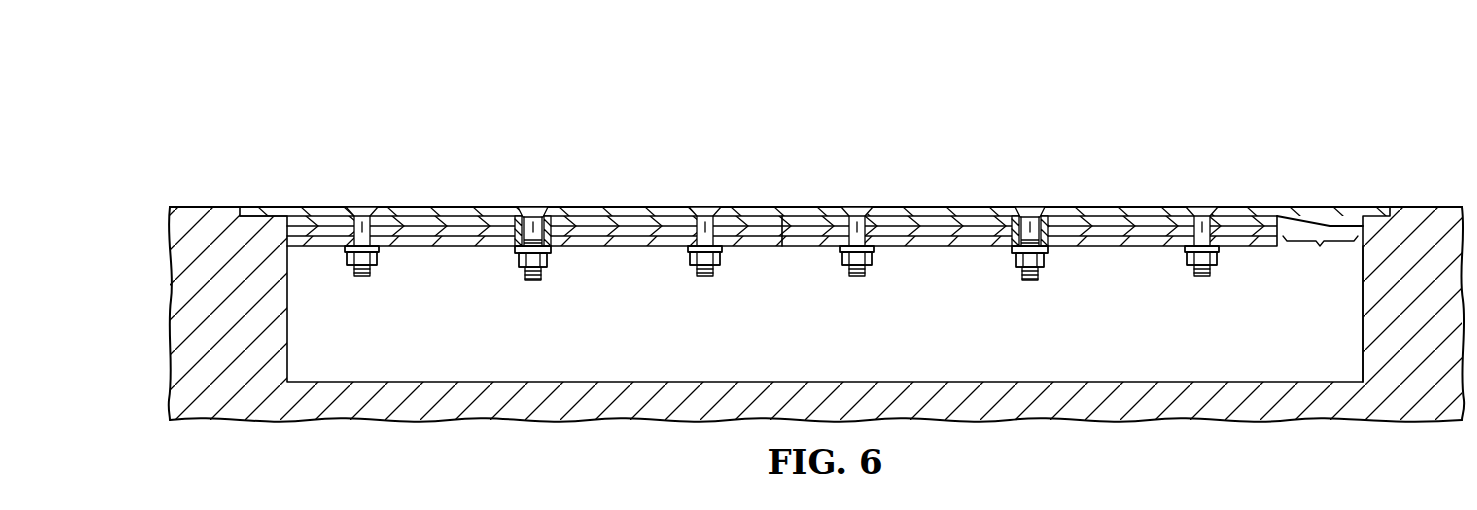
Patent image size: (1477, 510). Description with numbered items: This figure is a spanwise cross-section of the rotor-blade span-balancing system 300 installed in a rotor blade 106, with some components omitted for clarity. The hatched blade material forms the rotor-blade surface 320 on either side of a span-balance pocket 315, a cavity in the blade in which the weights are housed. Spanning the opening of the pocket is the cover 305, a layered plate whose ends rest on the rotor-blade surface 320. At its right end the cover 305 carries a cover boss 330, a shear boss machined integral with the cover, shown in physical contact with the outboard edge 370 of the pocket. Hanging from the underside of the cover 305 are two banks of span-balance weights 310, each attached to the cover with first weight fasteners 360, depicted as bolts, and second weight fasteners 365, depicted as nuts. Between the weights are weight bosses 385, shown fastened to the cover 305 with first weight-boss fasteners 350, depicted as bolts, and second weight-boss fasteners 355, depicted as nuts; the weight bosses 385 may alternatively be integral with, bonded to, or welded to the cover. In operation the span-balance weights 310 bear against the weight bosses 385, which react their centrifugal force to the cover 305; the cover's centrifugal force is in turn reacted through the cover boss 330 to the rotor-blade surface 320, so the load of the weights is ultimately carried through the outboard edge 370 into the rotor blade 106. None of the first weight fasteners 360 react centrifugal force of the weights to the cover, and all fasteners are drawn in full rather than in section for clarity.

The rotor blade 106 is at (178, 292).
The rotor-blade span-balancing system 300 is at (598, 88).
The cover 305 is at (238, 121).
The span-balance weights 310 is at (1280, 331).
The span-balance pocket 315 is at (855, 319).
The rotor-blade surface 320 is at (188, 207).
The cover boss 330 is at (1320, 259).
The first weight-boss fasteners 350 is at (534, 205).
The second weight-boss fasteners 355 is at (548, 262).
The first weight fasteners 360 is at (363, 205).
The second weight fasteners 365 is at (378, 257).
The outboard edge 370 is at (1362, 337).
The weight boss 385 is at (513, 287).